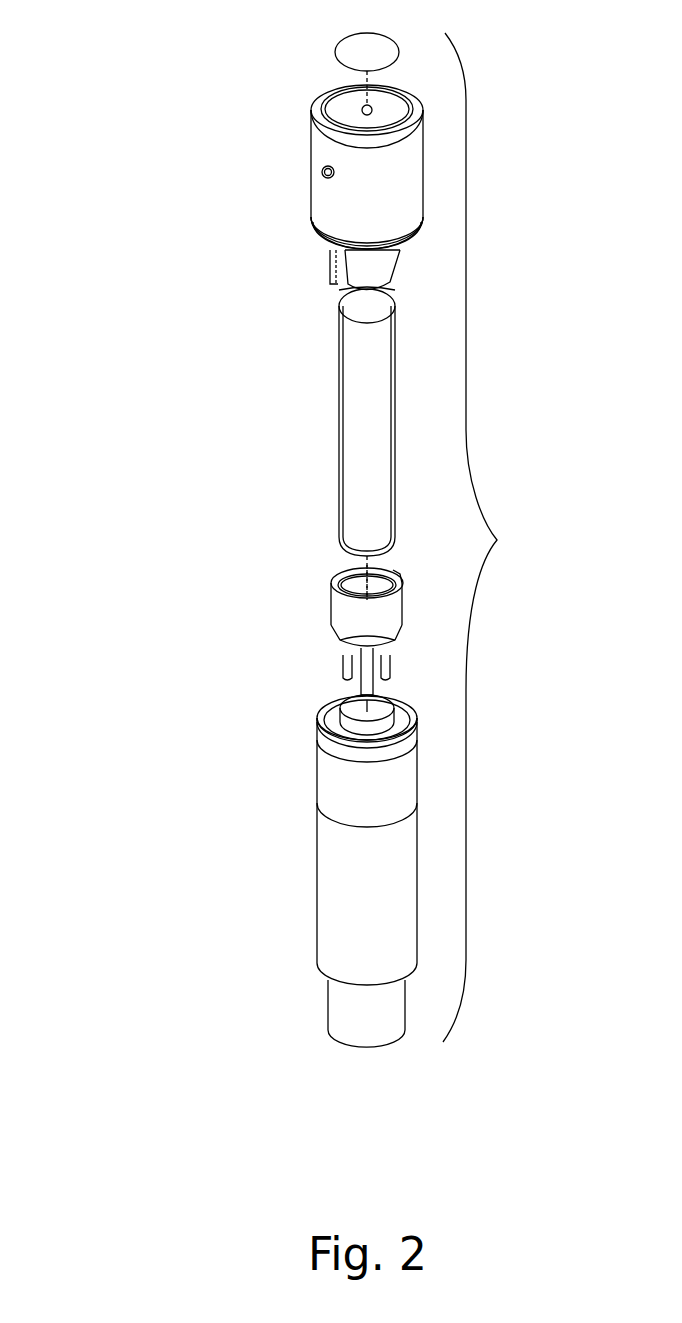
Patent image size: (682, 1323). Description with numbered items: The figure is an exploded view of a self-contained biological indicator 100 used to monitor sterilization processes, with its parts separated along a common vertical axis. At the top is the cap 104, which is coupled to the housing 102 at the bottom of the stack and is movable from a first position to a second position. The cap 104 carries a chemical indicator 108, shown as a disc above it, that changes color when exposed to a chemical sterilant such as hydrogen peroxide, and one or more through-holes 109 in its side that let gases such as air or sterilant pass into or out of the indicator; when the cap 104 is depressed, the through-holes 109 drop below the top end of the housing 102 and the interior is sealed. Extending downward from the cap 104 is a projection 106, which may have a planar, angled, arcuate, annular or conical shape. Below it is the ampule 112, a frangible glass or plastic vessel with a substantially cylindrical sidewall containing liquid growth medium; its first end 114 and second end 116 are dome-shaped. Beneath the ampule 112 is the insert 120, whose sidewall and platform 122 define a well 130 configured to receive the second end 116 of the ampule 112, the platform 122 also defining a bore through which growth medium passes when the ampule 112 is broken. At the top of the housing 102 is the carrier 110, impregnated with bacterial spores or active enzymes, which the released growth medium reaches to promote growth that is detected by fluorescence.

The self-contained biological indicator 100 is at (504, 537).
The housing 102 is at (270, 886).
The cap 104 is at (276, 186).
The projection 106 is at (362, 268).
The chemical indicator 108 is at (352, 50).
The through-holes 109 is at (325, 169).
The carrier 110 is at (363, 707).
The ampule 112 is at (308, 429).
The first end 114 is at (357, 312).
The second end 116 is at (365, 548).
The insert 120 is at (288, 619).
The platform 122 is at (365, 650).
The well 130 is at (352, 587).